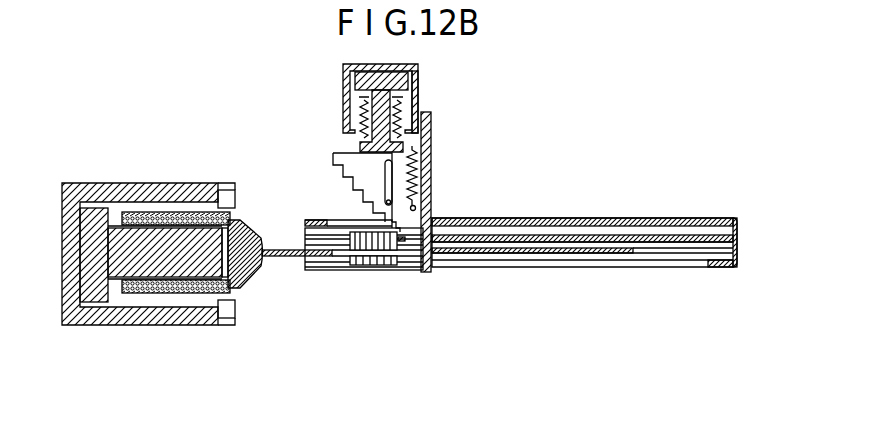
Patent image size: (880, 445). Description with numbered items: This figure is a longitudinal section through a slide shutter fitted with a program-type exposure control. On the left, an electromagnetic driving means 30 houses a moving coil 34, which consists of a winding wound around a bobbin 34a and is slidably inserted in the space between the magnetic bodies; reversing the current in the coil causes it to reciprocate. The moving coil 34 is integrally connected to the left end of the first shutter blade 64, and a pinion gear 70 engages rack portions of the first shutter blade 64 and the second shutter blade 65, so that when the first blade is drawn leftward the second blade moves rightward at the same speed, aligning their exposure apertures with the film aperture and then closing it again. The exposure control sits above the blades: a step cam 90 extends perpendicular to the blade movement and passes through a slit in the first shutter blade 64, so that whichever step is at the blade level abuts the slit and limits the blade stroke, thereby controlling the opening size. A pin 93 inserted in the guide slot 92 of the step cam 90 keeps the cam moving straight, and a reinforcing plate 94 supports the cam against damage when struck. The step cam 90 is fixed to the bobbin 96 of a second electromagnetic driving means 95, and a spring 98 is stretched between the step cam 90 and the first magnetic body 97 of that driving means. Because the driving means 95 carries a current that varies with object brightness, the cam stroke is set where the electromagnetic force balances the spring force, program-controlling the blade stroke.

The linear motor 30 is at (148, 171).
The moving coil 34 is at (182, 292).
The bobbin 34a is at (243, 273).
The pinion gear 70 is at (378, 243).
The first shutter blade 64 is at (617, 253).
The second shutter blade 65 is at (612, 236).
The step cam 90 is at (352, 163).
The guide slot 92 is at (386, 182).
The pin 93 is at (374, 207).
The reinforcing plate 94 is at (419, 189).
The electromagnetic driving means 95 is at (425, 86).
The bobbin 96 is at (372, 147).
The first magnetic body 97 is at (418, 103).
The spring 98 is at (431, 160).